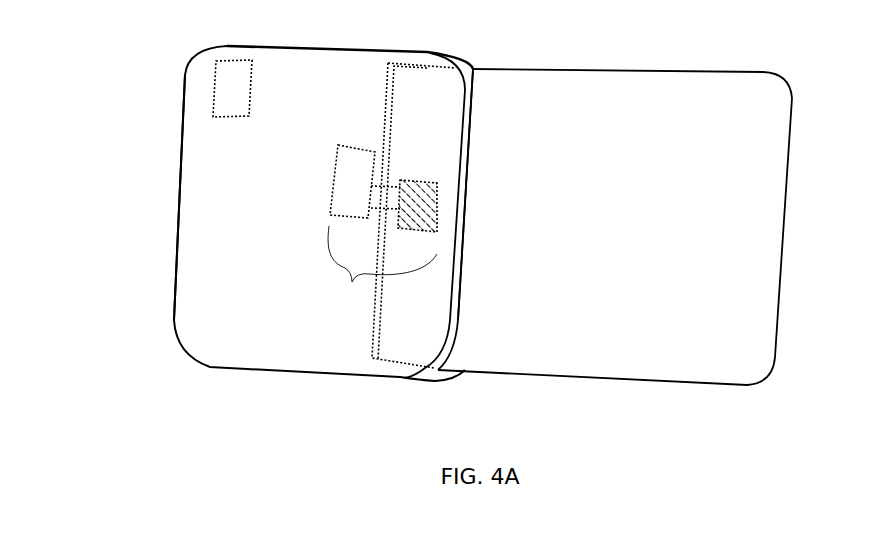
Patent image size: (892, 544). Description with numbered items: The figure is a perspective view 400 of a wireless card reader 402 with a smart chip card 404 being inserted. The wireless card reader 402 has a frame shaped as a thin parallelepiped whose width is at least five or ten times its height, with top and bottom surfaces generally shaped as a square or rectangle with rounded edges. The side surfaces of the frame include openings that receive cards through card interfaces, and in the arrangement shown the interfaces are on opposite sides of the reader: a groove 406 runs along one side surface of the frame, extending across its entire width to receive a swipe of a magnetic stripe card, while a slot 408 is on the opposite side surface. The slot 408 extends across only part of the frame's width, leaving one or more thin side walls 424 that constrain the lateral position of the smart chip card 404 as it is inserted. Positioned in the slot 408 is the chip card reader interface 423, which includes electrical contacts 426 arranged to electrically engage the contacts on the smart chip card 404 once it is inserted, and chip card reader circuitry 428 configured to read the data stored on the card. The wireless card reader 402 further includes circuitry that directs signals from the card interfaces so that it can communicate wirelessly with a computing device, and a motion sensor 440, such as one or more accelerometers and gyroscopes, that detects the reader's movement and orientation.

The perspective view 400 is at (96, 462).
The wireless card reader 402 is at (313, 47).
The smart chip card 404 is at (700, 70).
The groove 406 is at (179, 236).
The slot 408 is at (467, 193).
The chip card reader interface 423 is at (373, 269).
The thin side walls 424 is at (427, 68).
The electrical contacts 426 is at (409, 181).
The chip card reader circuitry 428 is at (345, 194).
The motion sensor 440 is at (213, 93).